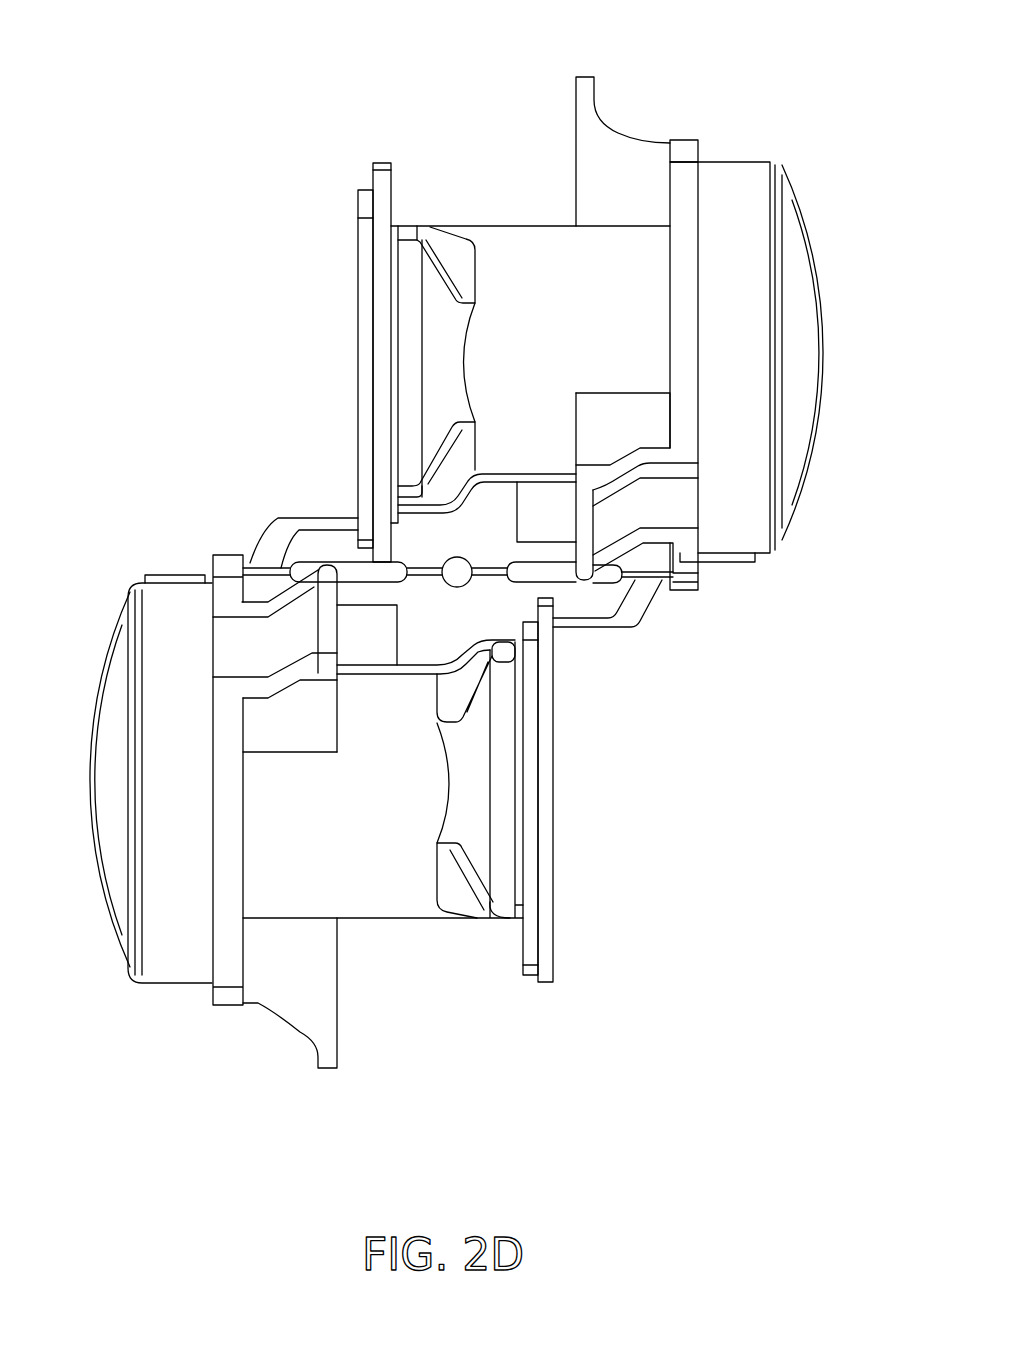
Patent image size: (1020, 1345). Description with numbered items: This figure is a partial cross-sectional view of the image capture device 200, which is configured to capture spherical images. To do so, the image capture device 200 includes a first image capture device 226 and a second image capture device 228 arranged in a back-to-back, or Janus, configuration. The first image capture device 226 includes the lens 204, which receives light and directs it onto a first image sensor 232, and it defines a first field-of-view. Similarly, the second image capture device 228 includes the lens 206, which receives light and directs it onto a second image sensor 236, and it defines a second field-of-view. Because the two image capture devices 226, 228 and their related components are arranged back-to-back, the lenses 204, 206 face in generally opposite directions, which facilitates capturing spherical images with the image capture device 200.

The image capture device 200 is at (347, 152).
The lens 204 is at (113, 750).
The lens 206 is at (799, 330).
The first image capture device 226 is at (228, 1037).
The second image capture device 228 is at (752, 93).
The first image sensor 232 is at (533, 788).
The second image sensor 236 is at (372, 352).